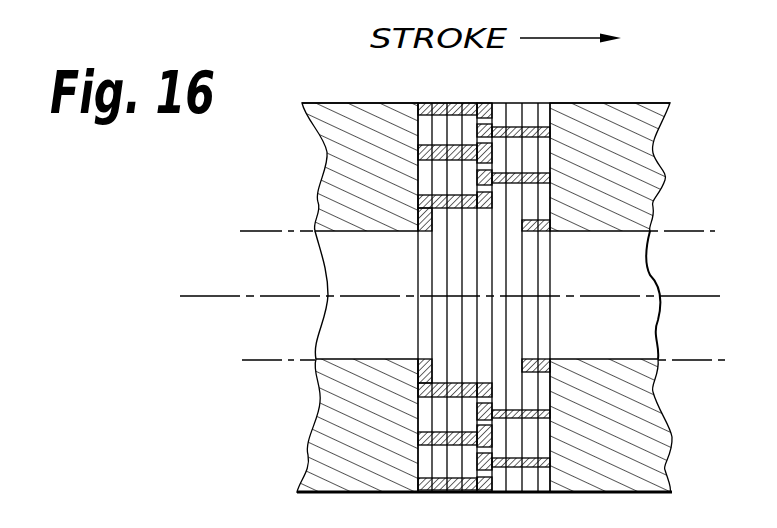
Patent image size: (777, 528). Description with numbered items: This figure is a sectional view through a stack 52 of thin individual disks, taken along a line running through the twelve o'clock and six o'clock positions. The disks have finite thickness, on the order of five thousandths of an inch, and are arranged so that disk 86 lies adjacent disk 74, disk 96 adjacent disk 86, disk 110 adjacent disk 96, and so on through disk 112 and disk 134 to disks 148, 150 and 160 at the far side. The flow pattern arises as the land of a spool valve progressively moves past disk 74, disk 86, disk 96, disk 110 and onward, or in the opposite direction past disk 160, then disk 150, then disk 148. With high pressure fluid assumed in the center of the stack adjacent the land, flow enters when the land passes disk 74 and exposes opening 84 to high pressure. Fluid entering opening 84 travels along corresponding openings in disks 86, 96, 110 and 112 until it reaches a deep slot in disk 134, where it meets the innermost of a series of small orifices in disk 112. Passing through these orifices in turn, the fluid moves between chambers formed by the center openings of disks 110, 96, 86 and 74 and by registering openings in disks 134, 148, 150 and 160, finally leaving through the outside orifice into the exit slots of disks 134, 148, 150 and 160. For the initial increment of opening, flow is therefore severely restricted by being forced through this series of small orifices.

The stack 52 is at (421, 355).
The disk 74 is at (427, 102).
The opening 84 is at (427, 232).
The disk 86 is at (437, 103).
The disk 96 is at (457, 103).
The disk 110 is at (485, 103).
The disk 112 is at (493, 101).
The disk 134 is at (507, 103).
The disk 148 is at (523, 101).
The disk 150 is at (543, 101).
The disk 160 is at (580, 103).